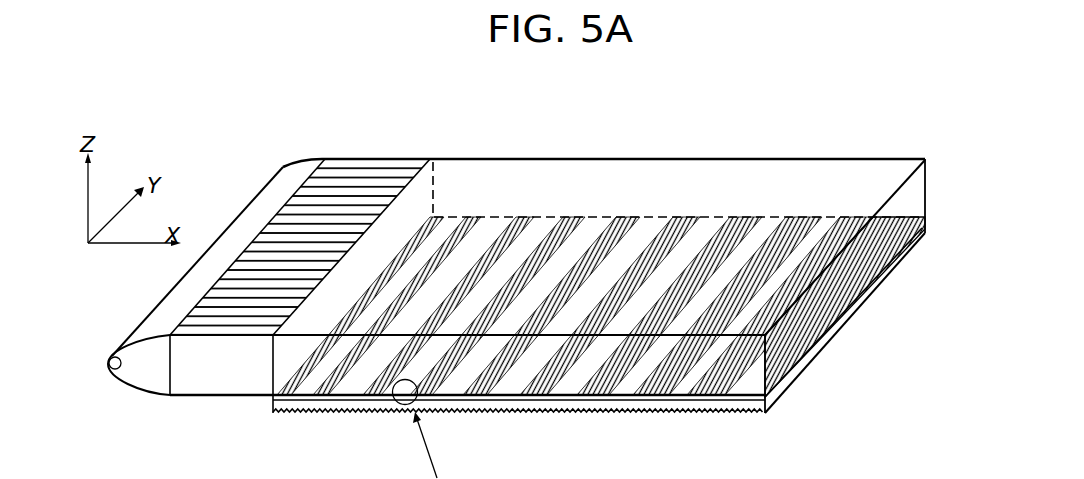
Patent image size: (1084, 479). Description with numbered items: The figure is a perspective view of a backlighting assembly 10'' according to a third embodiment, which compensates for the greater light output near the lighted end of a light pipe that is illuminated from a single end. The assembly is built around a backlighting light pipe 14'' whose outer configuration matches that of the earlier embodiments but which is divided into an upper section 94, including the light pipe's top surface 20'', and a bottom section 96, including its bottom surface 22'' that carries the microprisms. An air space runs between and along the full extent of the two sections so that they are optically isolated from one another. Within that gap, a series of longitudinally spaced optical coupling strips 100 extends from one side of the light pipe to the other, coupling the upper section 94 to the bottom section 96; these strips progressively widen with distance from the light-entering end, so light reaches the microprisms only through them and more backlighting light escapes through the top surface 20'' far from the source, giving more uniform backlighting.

The backlighting assembly 10'' is at (436, 258).
The backlighting light pipe 14'' is at (604, 161).
The top surface 20'' is at (676, 155).
The optical coupling strips 100 is at (727, 225).
The upper section 94 is at (910, 197).
The bottom section 96 is at (848, 315).
The bottom surface 22'' is at (599, 353).